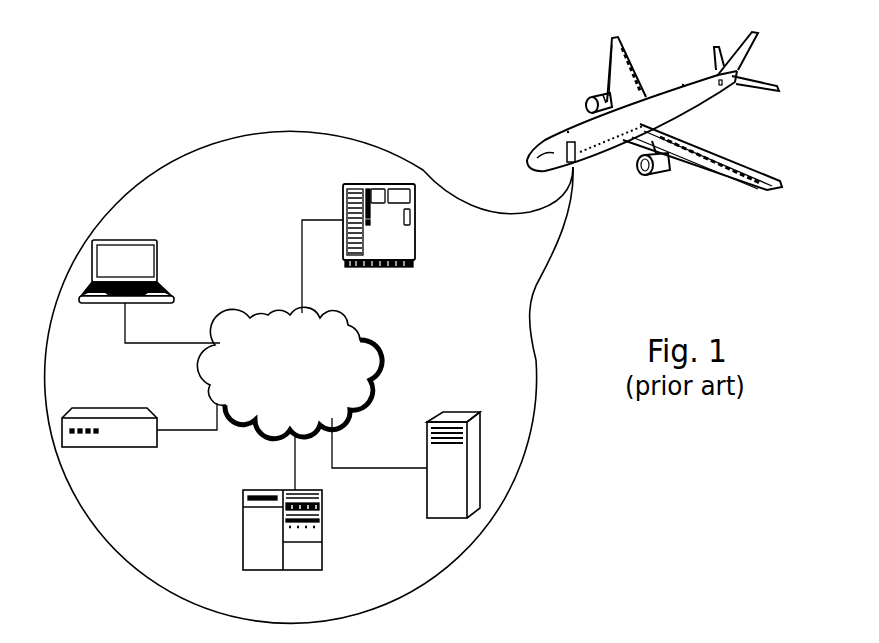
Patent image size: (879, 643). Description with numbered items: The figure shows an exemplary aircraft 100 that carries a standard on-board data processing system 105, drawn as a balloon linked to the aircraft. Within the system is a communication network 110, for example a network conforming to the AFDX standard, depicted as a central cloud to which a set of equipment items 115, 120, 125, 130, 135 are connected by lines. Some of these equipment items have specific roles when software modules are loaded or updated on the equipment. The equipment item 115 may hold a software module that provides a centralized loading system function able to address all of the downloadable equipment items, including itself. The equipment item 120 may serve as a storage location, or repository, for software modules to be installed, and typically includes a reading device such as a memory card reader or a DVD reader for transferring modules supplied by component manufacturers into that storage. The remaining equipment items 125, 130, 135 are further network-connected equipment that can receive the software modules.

The aircraft 100 is at (702, 107).
The on-board data processing system 105 is at (532, 322).
The communication network 110 is at (300, 373).
The equipment item 115 is at (158, 260).
The equipment item 120 is at (90, 408).
The equipment item 125 is at (415, 247).
The equipment item 130 is at (427, 490).
The equipment item 135 is at (322, 550).